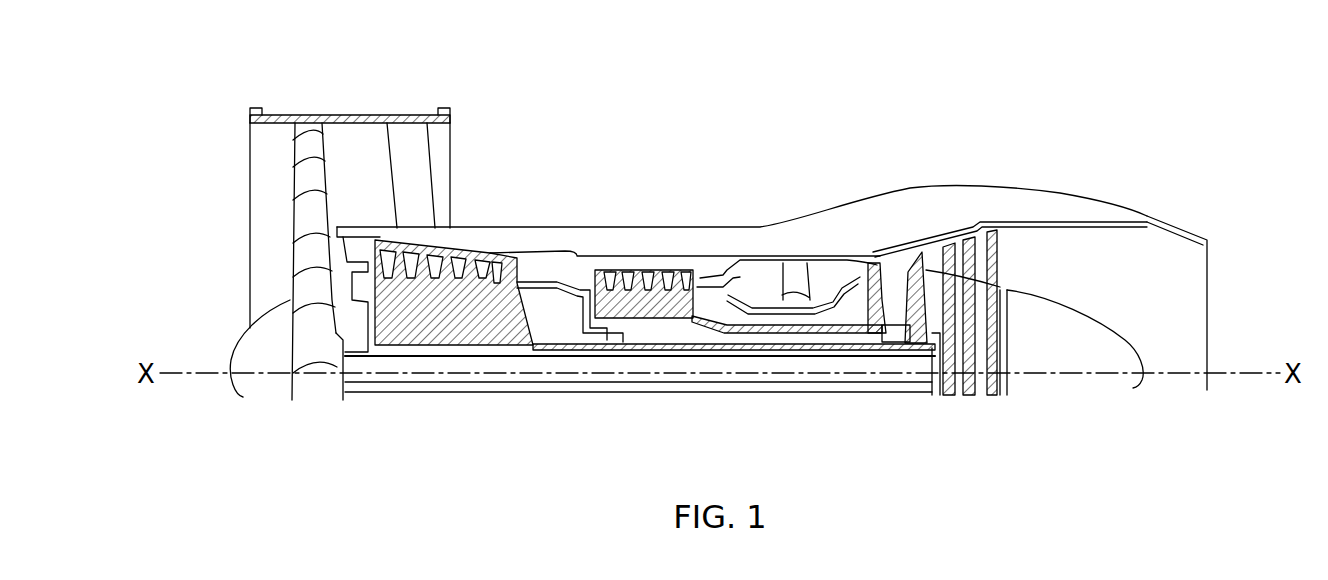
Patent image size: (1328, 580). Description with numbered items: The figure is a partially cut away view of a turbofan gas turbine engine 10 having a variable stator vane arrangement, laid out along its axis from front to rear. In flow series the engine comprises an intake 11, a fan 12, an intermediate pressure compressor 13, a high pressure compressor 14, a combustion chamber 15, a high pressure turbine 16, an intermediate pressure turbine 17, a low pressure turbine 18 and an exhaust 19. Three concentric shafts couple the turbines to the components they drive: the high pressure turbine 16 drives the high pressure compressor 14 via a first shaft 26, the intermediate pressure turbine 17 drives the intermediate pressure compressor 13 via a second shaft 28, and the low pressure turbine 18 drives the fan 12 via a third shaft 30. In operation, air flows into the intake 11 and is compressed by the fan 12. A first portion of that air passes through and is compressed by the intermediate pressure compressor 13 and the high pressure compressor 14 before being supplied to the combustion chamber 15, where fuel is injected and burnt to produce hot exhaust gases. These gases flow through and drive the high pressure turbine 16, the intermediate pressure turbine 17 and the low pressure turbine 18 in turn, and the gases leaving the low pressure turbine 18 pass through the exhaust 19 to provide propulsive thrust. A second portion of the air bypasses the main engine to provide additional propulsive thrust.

The turbofan gas turbine engine 10 is at (612, 150).
The intake 11 is at (230, 245).
The fan 12 is at (307, 120).
The intermediate pressure compressor 13 is at (458, 278).
The high pressure compressor 14 is at (632, 272).
The combustion chamber 15 is at (797, 250).
The high pressure turbine 16 is at (877, 253).
The intermediate pressure turbine 17 is at (923, 252).
The low pressure turbine 18 is at (970, 230).
The exhaust 19 is at (1193, 315).
The first shaft 26 is at (837, 334).
The second shaft 28 is at (610, 346).
The third shaft 30 is at (508, 392).